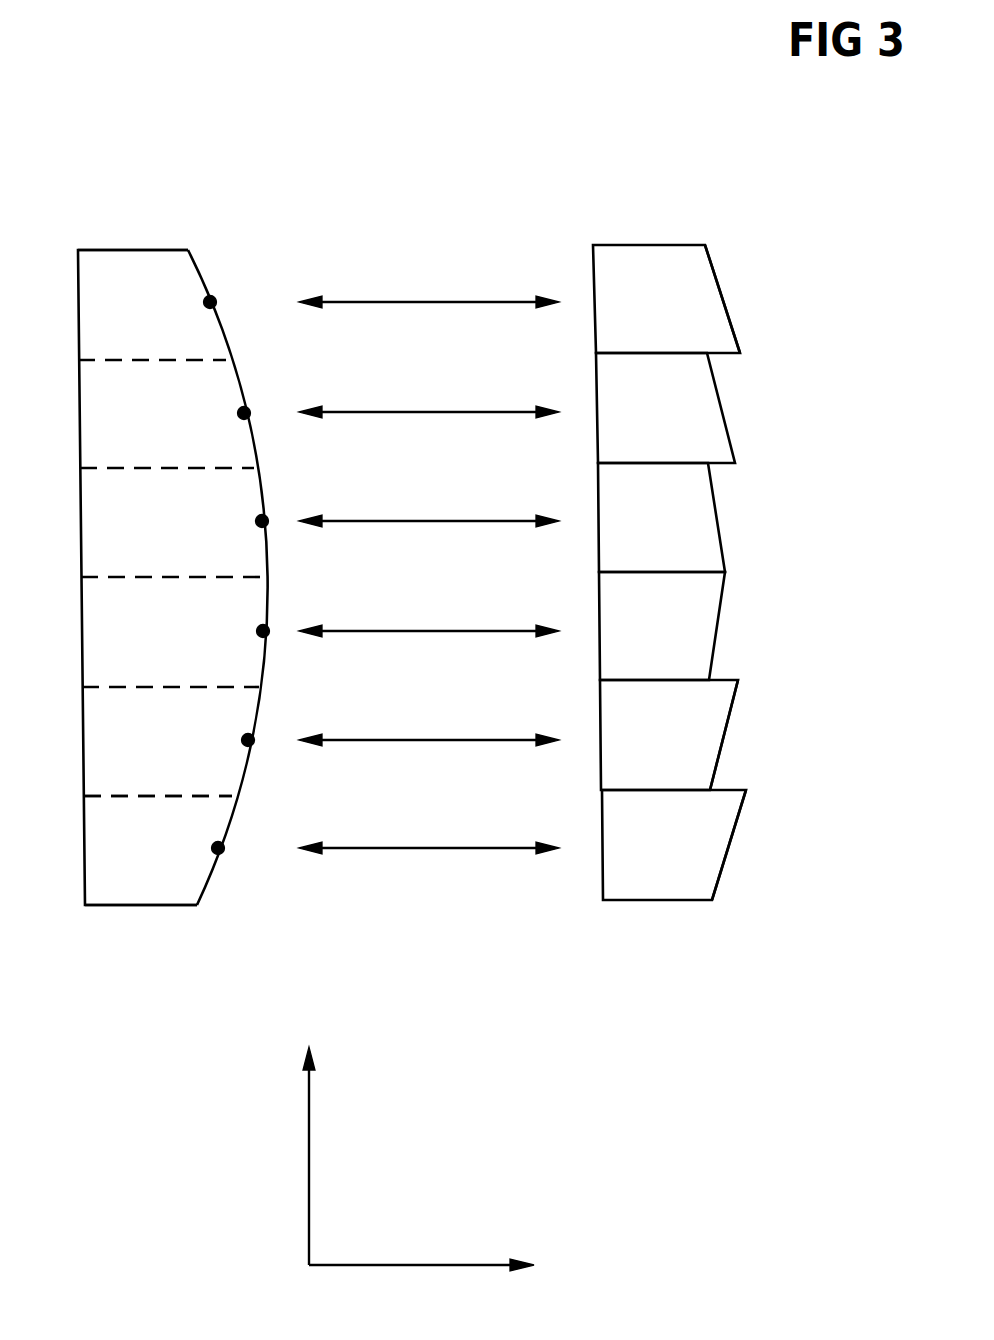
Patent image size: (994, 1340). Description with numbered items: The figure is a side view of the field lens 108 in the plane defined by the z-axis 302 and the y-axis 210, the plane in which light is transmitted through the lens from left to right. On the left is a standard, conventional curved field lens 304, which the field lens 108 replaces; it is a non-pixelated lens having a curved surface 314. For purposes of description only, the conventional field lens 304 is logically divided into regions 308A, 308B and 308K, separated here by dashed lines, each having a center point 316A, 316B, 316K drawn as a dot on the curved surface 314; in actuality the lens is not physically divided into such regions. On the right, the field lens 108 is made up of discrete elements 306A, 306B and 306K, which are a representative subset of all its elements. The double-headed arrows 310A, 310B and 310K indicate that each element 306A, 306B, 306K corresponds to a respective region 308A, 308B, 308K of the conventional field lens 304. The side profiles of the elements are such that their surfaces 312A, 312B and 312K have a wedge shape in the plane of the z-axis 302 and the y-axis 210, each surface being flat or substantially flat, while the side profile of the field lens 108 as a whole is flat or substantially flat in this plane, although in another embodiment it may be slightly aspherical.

The conventional curved field lens 304 is at (214, 617).
The curved surface 314 is at (233, 213).
The region 308K is at (172, 318).
The region 308B is at (178, 757).
The region 308A is at (178, 865).
The center point 316K is at (297, 247).
The center point 316B is at (252, 744).
The center point 316A is at (222, 852).
The arrow 310K is at (432, 301).
The arrow 310B is at (425, 742).
The arrow 310A is at (428, 850).
The field lens 108 is at (714, 635).
The element 306K is at (690, 312).
The element 306B is at (692, 749).
The element 306A is at (692, 859).
The surface 312K is at (712, 270).
The surface 312B is at (728, 715).
The surface 312A is at (733, 835).
The y-axis 210 is at (310, 1085).
The z-axis 302 is at (480, 1222).